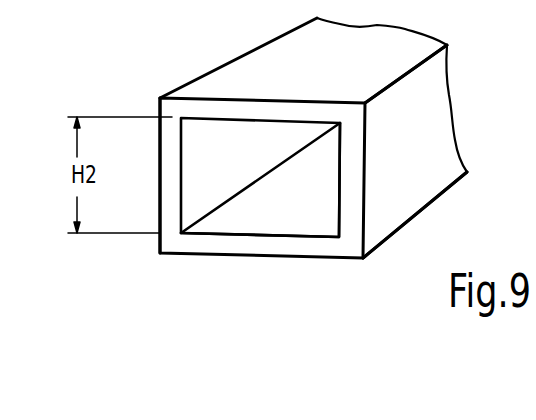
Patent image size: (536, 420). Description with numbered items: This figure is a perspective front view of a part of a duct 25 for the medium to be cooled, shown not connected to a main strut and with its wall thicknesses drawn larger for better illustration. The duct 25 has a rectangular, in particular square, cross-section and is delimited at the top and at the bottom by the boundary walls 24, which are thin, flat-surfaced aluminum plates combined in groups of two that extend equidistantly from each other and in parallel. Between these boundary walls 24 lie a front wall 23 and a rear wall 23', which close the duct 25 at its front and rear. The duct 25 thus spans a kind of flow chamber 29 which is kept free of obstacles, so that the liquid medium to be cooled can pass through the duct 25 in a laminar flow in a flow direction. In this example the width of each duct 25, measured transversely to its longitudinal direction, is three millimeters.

The front wall 23 is at (427, 151).
The rear wall 23' is at (136, 175).
The boundary wall 24 is at (352, 68).
The duct 25 is at (230, 218).
The flow chamber 29 is at (315, 220).